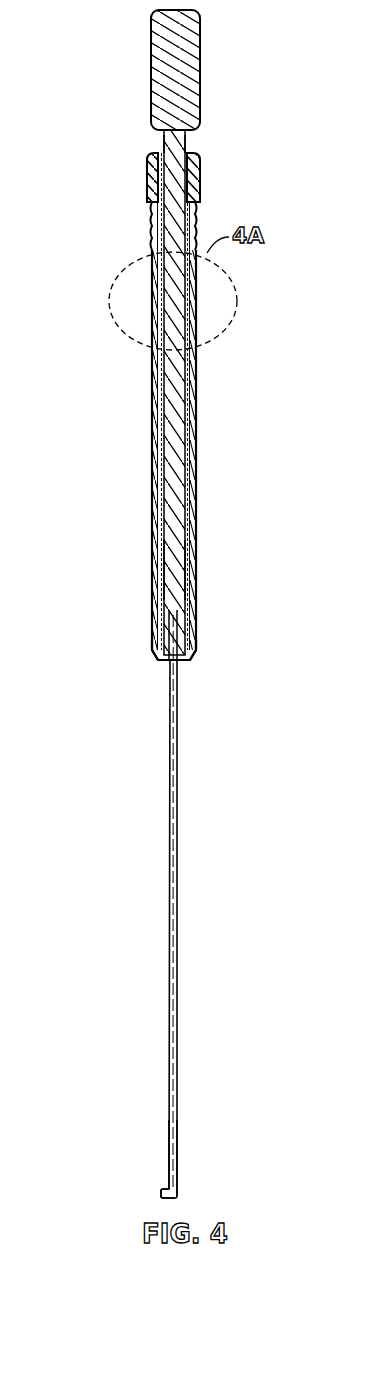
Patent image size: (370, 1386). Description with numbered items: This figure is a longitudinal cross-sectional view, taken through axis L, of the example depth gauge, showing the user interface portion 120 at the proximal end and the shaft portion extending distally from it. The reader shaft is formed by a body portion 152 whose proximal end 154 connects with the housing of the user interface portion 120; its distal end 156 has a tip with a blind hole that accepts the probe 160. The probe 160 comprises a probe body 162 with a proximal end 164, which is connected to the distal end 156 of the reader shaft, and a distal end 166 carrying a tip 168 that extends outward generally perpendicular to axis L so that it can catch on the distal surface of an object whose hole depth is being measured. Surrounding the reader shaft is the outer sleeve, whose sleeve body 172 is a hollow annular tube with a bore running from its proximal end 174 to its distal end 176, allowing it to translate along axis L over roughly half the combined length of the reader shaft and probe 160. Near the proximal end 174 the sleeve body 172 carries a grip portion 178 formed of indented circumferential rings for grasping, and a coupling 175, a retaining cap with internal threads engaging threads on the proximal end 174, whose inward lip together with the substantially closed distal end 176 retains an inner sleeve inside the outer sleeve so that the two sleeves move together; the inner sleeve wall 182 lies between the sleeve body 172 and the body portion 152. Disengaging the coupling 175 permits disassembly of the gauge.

The user interface portion 120 is at (186, 76).
The body portion 152 is at (176, 386).
The proximal end 154 is at (197, 146).
The distal end 156 is at (176, 573).
The probe 160 is at (188, 906).
The probe body 162 is at (169, 929).
The proximal end 164 is at (178, 646).
The distal end 166 is at (192, 1167).
The tip 168 is at (162, 1195).
The sleeve body 172 is at (197, 463).
The proximal end 174 is at (137, 175).
The coupling 175 is at (201, 186).
The distal end 176 is at (139, 621).
The grip portion 178 is at (134, 232).
The inner lumen wall 182 is at (160, 386).